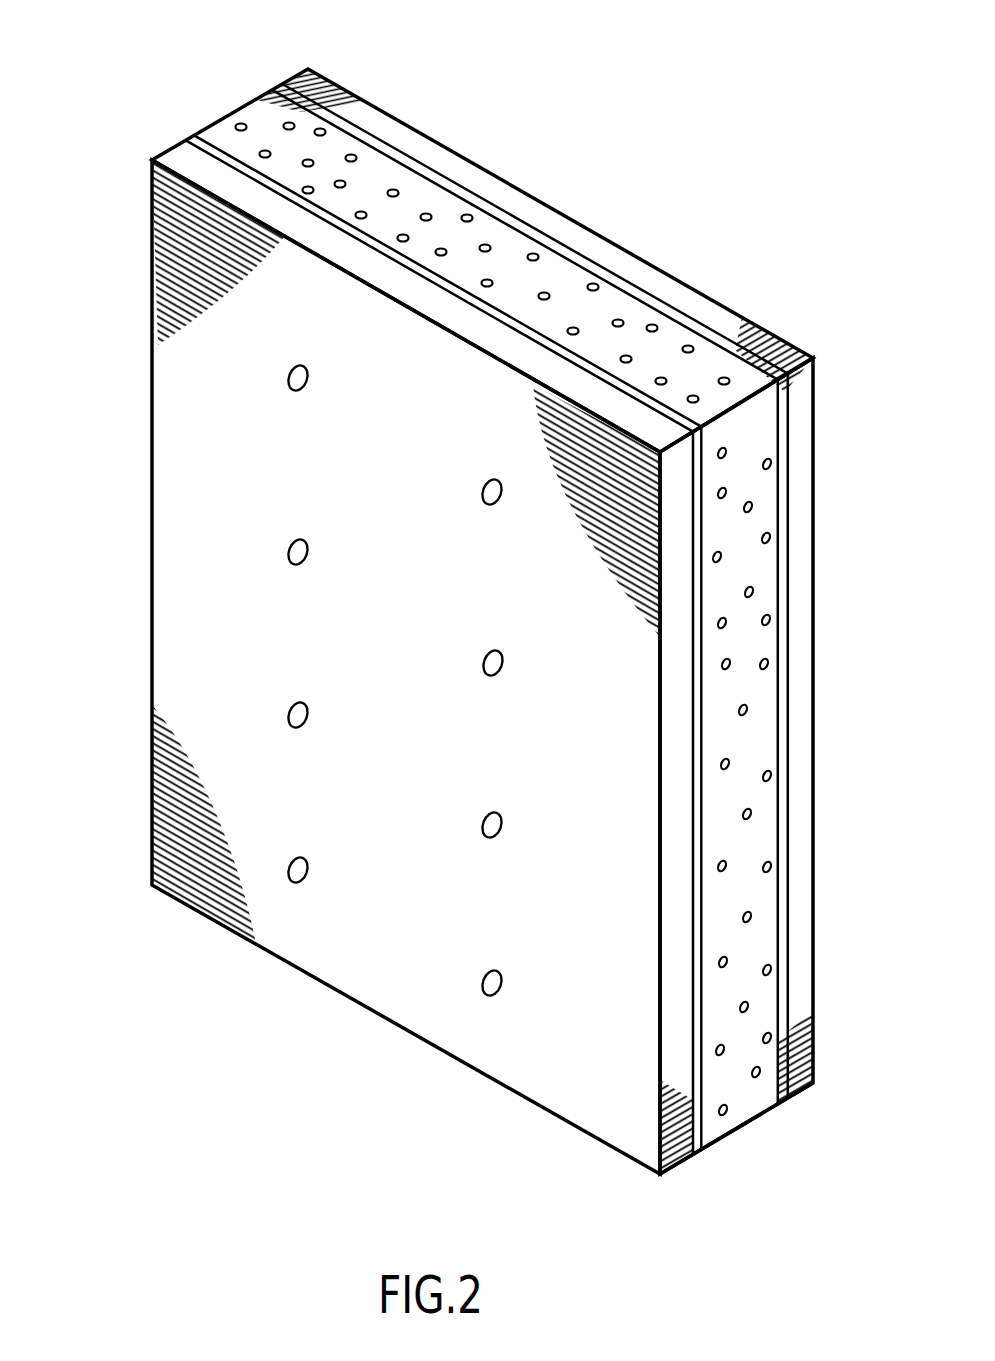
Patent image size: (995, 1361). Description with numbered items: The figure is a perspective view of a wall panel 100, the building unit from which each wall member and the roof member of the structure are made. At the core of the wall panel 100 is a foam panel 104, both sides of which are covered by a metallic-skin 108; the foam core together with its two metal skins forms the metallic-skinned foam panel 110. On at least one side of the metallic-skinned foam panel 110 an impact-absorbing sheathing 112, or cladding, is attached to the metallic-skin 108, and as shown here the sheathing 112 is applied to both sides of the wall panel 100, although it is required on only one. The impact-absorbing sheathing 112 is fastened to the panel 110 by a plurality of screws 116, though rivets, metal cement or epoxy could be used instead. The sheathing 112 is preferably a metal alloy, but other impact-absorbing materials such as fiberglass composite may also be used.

The wall panel 100 is at (238, 530).
The foam panel 104 is at (410, 208).
The metallic-skin 108 is at (208, 148).
The metallic-skinned foam panel 110 is at (757, 1120).
The impact-absorbing sheathing 112 is at (180, 158).
The screws 116 is at (502, 822).